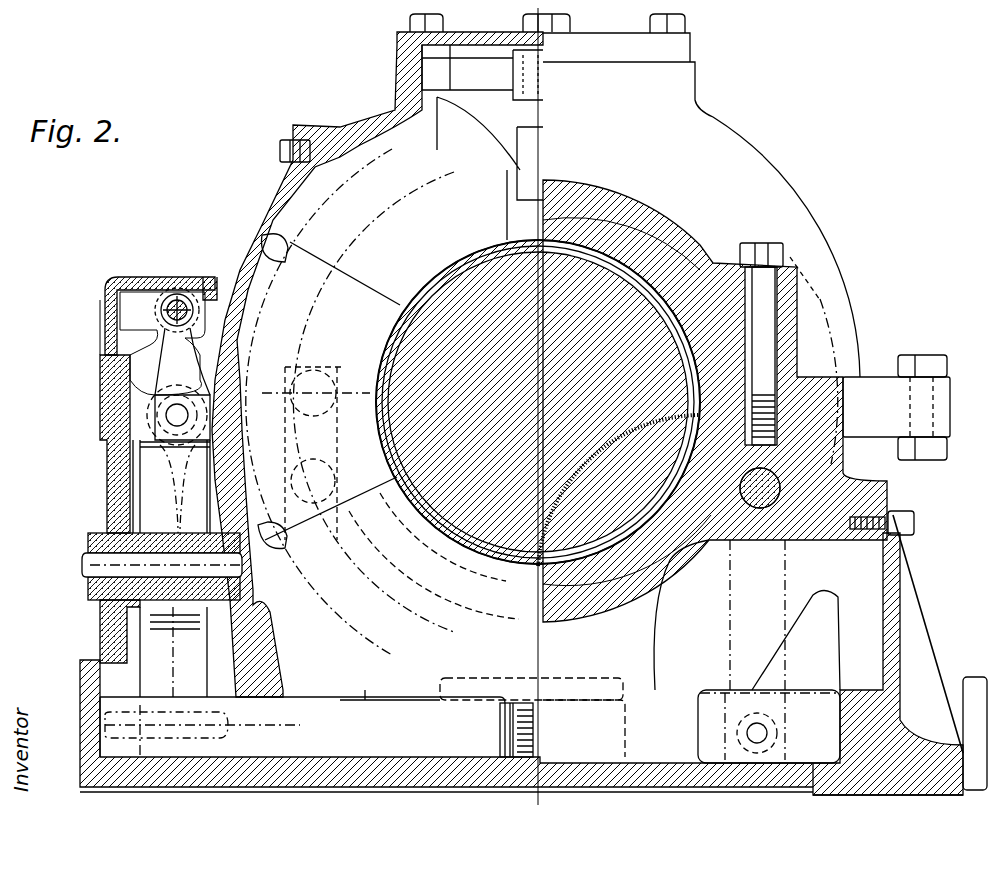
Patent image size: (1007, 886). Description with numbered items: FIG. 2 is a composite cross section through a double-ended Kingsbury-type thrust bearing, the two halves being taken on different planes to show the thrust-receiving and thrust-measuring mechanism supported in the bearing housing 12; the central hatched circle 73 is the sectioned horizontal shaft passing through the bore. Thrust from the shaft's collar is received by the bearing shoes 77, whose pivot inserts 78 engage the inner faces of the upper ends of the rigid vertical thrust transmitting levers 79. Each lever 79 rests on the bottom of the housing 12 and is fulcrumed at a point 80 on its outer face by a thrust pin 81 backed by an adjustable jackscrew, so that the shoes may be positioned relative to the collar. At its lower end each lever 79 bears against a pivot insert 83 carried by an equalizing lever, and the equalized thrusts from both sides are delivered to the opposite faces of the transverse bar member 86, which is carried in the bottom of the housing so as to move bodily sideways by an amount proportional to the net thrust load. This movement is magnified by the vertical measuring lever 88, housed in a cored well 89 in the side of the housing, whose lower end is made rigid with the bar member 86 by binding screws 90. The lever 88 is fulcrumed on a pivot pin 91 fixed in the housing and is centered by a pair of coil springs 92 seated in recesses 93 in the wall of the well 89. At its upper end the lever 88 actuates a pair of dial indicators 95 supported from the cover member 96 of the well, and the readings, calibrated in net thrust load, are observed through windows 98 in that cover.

The bearing housing 12 is at (690, 257).
The shaft 73 is at (478, 522).
The bearing shoes 77 is at (348, 296).
The pivot insert 78 is at (312, 380).
The vertical thrust transmitting lever 79 is at (298, 375).
The fulcrum 80 is at (312, 466).
The thrust pin 81 is at (752, 530).
The pivot insert 83 is at (348, 723).
The bar member 86 is at (425, 712).
The measuring lever 88 is at (155, 498).
The cored well 89 is at (135, 478).
The binding screws 90 is at (390, 726).
The pivot pin 91 is at (100, 566).
The coil springs 92 is at (158, 398).
The recesses 93 is at (165, 440).
The dial indicators 95 is at (160, 312).
The cover member 96 is at (172, 282).
The windows 98 is at (160, 300).